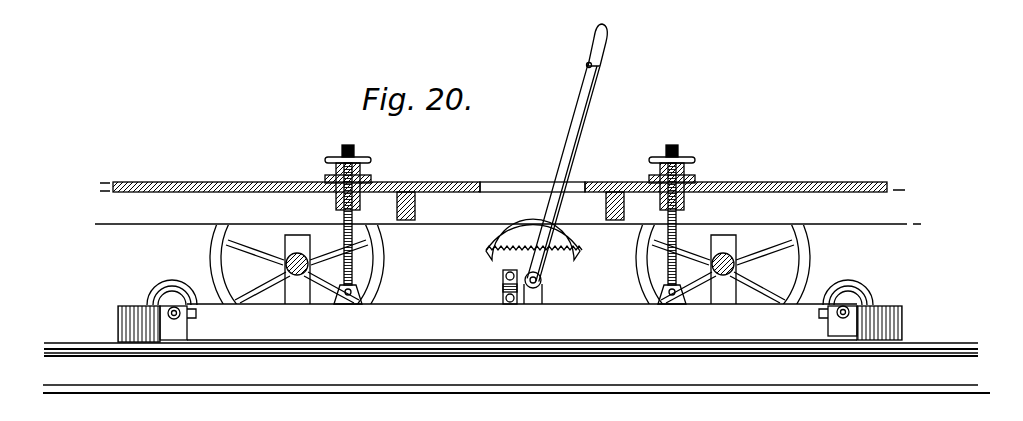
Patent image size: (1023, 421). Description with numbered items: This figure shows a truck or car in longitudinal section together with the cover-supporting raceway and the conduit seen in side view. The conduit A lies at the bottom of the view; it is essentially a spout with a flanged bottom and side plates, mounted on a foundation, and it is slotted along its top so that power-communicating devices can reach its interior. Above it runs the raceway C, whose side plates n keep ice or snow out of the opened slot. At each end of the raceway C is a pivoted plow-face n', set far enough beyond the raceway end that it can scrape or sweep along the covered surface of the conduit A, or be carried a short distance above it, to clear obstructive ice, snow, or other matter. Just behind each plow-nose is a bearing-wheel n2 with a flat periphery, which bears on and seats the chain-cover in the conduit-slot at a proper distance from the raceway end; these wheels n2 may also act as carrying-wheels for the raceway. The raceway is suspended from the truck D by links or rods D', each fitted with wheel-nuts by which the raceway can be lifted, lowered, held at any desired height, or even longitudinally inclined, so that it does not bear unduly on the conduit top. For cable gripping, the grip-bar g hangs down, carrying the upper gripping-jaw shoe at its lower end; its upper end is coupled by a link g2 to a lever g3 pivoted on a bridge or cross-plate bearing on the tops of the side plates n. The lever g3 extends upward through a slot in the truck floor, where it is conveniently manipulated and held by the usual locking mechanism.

The truck D is at (502, 175).
The links or rods D' is at (516, 221).
The lever g3 is at (572, 163).
The link g2 is at (503, 283).
The grip-bar g is at (503, 299).
The raceway C is at (613, 301).
The side plates n is at (522, 322).
The pivoted plow-faces n' is at (497, 312).
The bearing-wheel n2 is at (510, 301).
The conduit A is at (516, 368).